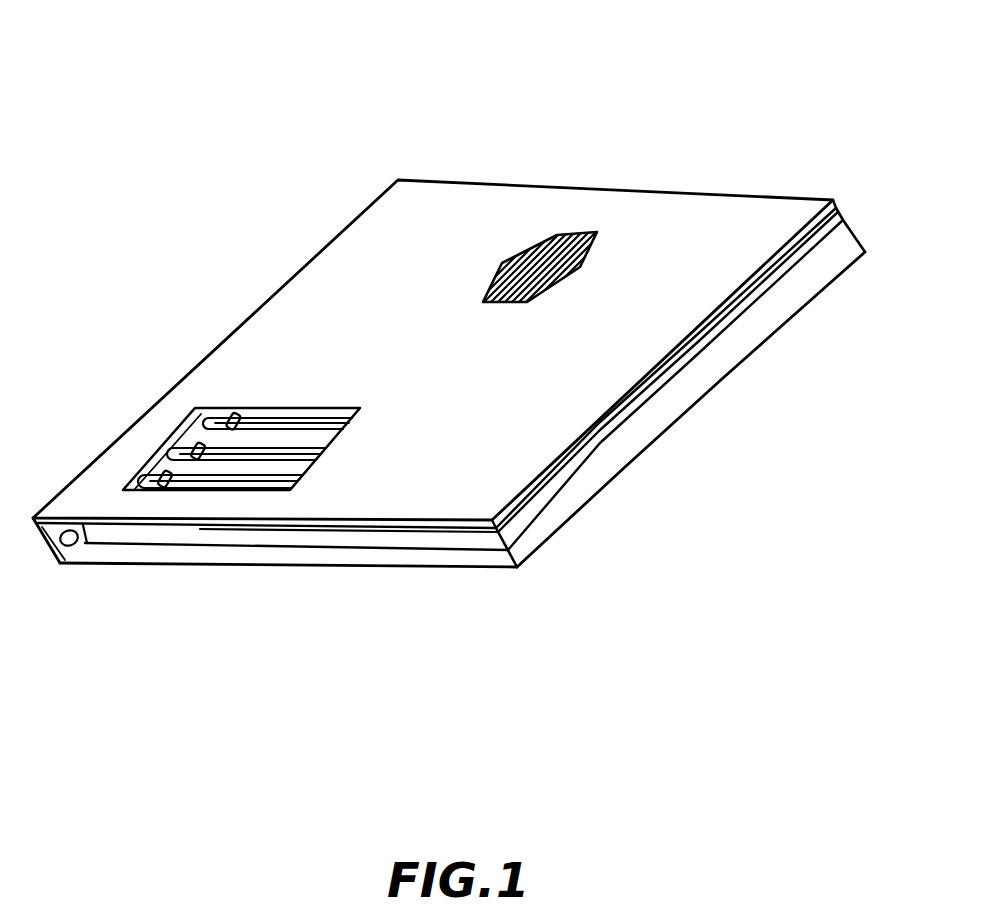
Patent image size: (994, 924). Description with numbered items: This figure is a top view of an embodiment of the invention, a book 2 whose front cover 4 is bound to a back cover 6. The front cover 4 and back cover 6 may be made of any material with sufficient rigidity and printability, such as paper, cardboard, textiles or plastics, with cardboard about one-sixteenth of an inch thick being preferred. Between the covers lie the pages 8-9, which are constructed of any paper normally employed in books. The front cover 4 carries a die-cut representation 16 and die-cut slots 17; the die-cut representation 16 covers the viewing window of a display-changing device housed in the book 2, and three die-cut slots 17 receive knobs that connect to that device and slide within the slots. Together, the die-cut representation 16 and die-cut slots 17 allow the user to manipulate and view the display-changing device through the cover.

The book 2 is at (461, 421).
The front cover 4 is at (698, 252).
The back cover 6 is at (517, 567).
The pages 8-9 is at (810, 258).
The die-cut representation 16 is at (557, 232).
The die-cut slots 17 is at (290, 490).